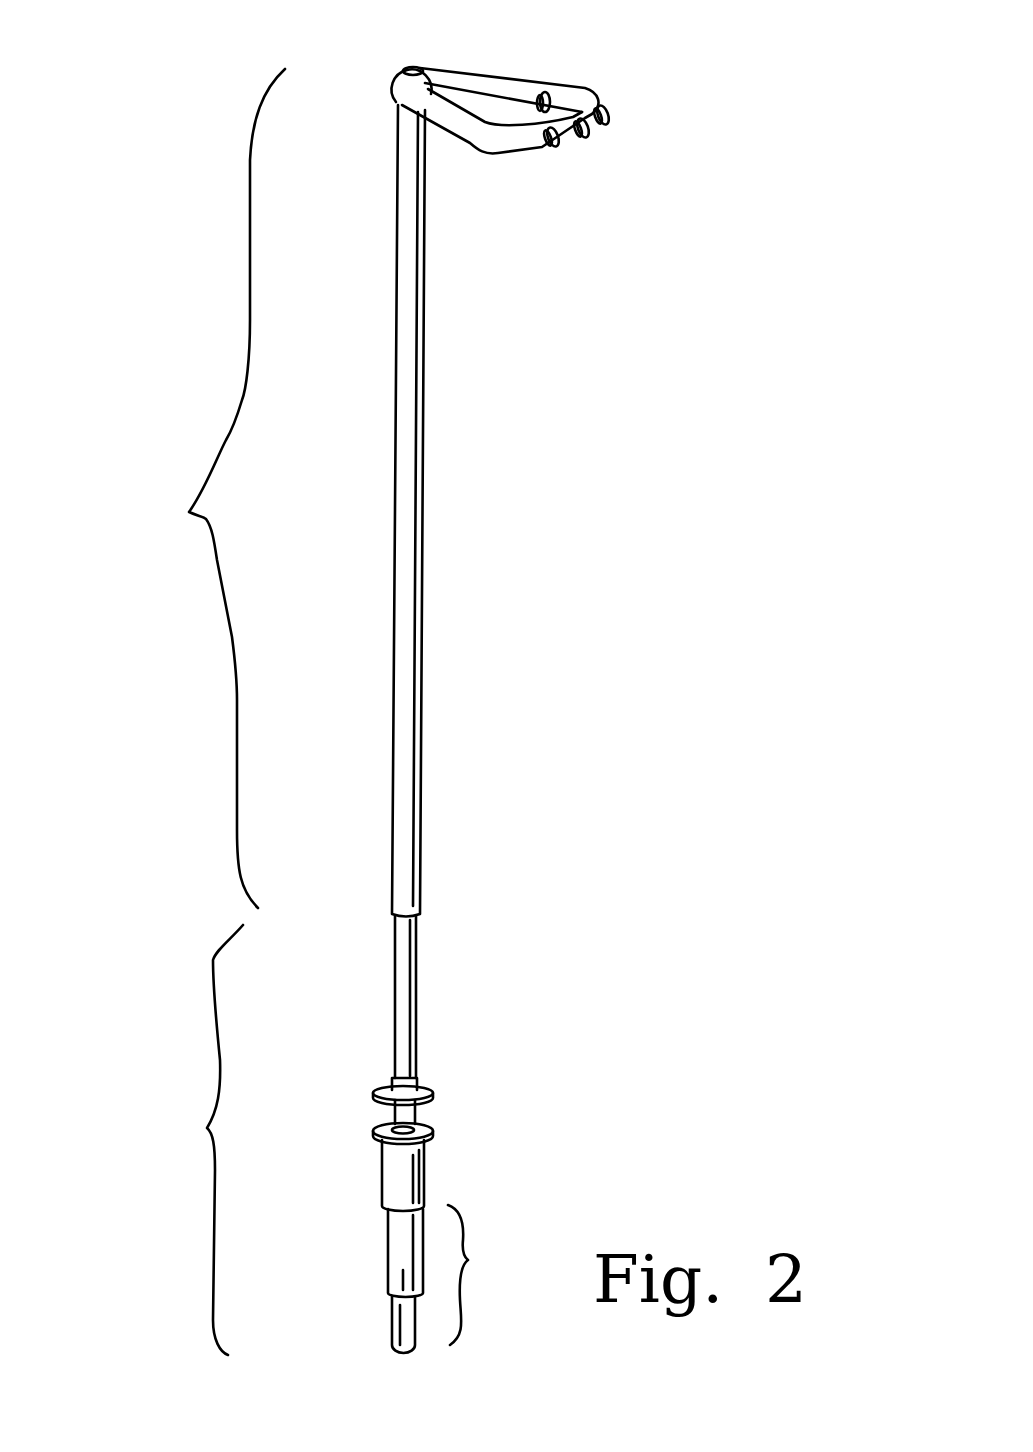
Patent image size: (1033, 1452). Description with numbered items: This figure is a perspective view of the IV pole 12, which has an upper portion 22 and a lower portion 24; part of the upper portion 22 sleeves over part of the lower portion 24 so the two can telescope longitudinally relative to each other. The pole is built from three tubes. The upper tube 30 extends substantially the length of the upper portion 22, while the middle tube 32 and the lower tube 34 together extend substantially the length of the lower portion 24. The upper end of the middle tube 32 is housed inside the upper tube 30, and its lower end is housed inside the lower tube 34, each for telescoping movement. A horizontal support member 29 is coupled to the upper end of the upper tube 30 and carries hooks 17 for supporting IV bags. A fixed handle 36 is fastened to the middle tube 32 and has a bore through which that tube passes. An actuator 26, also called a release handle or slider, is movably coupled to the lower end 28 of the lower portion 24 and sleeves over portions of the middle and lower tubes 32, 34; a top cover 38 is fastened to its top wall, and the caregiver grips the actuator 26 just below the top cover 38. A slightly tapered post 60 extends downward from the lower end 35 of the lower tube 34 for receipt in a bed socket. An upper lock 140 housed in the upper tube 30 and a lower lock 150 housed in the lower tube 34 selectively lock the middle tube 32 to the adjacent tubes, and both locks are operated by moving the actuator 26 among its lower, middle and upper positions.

The IV pole 12 is at (714, 268).
The hooks 17 is at (617, 113).
The upper portion 22 is at (176, 497).
The lower portion 24 is at (199, 1130).
The actuator 26 is at (458, 1179).
The lower end 28 is at (470, 1262).
The horizontal support member 29 is at (491, 86).
The upper tube 30 is at (421, 448).
The middle tube 32 is at (407, 973).
The lower tube 34 is at (398, 1242).
The lower end 35 is at (393, 1285).
The fixed handle 36 is at (437, 1090).
The top cover 38 is at (435, 1130).
The post 60 is at (405, 1320).
The upper lock 140 is at (448, 514).
The lower lock 150 is at (369, 1175).